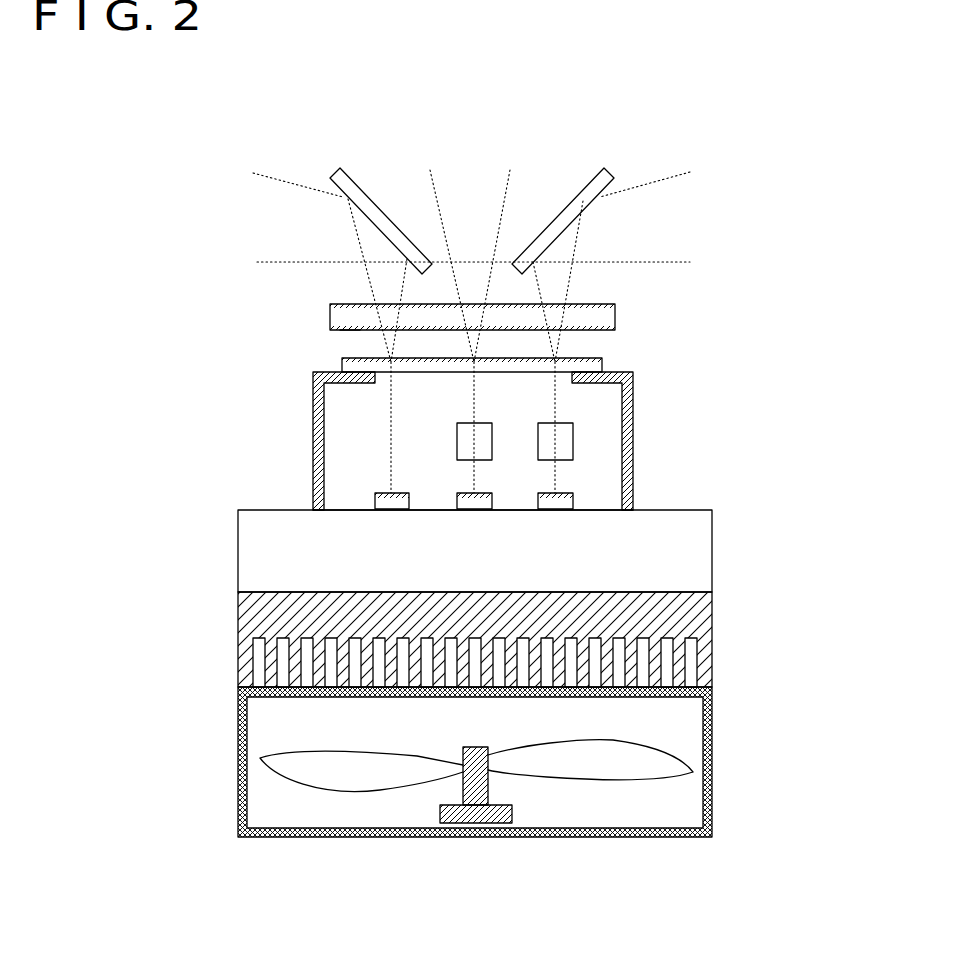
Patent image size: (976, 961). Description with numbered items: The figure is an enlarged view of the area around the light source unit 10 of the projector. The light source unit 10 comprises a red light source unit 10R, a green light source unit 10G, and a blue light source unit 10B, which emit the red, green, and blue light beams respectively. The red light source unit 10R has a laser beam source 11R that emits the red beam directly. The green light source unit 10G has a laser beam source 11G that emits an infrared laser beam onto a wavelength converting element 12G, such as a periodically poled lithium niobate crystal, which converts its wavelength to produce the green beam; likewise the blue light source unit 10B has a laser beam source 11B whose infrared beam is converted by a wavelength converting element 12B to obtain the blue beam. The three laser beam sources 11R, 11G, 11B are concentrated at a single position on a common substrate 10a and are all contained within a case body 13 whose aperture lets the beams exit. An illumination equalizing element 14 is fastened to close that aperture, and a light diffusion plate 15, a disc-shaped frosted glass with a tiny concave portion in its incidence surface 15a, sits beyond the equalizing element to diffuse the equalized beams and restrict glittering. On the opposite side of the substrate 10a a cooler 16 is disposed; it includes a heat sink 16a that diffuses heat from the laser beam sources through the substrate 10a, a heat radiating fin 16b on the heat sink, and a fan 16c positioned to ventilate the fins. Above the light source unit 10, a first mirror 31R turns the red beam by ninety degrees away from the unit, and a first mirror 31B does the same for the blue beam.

The light source unit 10 is at (645, 408).
The substrate 10a is at (712, 543).
The red light source unit 10R is at (356, 431).
The green light source unit 10G is at (498, 468).
The blue light source unit 10B is at (586, 442).
The laser beam source 11R is at (375, 502).
The laser beam source 11G is at (457, 502).
The laser beam source 11B is at (568, 502).
The wavelength converting element 12G is at (457, 438).
The wavelength converting element 12B is at (545, 440).
The case body 13 is at (633, 458).
The illumination equalizing element 14 is at (602, 362).
The light diffusion plate 15 is at (615, 310).
The incidence surface 15a is at (340, 330).
The cooler 16 is at (798, 703).
The heat sink 16a is at (712, 628).
The heat radiating fin 16b is at (238, 682).
The fan 16c is at (712, 765).
The first mirror 31R is at (348, 176).
The first mirror 31B is at (596, 176).